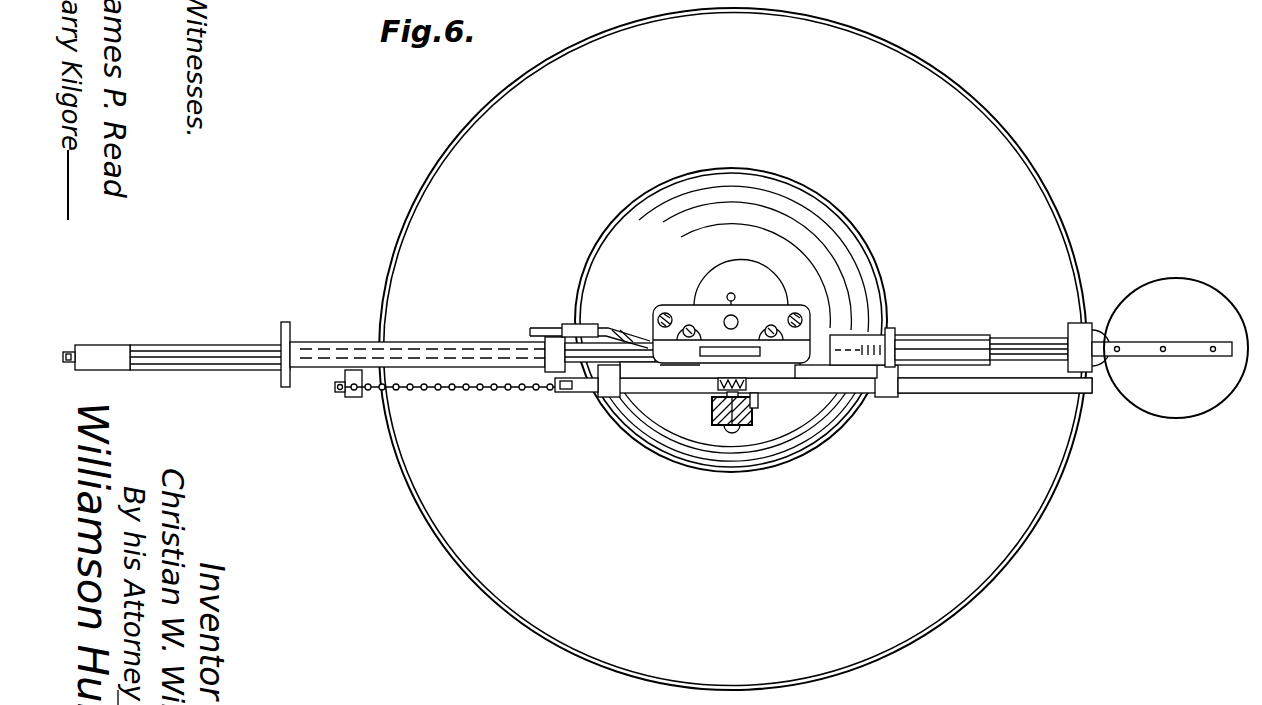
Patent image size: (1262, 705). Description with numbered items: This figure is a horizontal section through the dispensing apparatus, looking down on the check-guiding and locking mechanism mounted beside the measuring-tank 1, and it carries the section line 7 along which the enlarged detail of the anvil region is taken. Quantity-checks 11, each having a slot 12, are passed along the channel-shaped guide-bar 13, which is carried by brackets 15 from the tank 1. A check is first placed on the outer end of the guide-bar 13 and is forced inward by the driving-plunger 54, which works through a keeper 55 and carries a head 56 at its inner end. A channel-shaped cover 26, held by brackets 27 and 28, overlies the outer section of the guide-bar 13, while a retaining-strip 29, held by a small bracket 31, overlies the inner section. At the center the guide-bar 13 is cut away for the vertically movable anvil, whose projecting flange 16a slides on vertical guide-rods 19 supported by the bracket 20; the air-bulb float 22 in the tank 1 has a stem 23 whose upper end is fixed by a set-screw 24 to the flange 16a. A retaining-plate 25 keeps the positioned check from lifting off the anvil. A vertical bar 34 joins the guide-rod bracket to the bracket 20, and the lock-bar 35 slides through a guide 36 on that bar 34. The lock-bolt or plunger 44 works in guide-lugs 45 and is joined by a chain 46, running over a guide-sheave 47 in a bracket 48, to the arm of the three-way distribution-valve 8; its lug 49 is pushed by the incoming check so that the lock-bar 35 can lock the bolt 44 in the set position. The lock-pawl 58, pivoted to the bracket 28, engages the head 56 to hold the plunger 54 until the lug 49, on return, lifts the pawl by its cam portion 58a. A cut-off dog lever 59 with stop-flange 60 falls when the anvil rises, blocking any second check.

The measuring-tank 1 is at (1056, 214).
The section line x7 x7 7 is at (515, 350).
The three-way distribution-valve 8 is at (696, 366).
The quantity-check 11 is at (968, 338).
The slot of the quantity-check 12 is at (692, 382).
The channel-shaped guide-bar 13 is at (240, 372).
The brackets 15 is at (1081, 328).
The projecting flange of the anvil 16a is at (760, 330).
The vertical guide-rods 19 is at (664, 312).
The bracket 20 is at (758, 410).
The air-bulb float 22 is at (812, 218).
The vertically-projecting stem 23 is at (681, 305).
The set-screw 24 is at (740, 296).
The retaining-plate 25 is at (648, 340).
The channel-shaped cover 26 is at (392, 345).
The bracket 27 is at (291, 330).
The bracket 28 is at (553, 374).
The retaining-strip 29 is at (1000, 346).
The small bracket 31 is at (898, 336).
The vertical bar 34 is at (745, 428).
The lock-bar 35 is at (718, 392).
The guide 36 is at (752, 366).
The lock-bolt or plunger 44 is at (1005, 394).
The guide-lugs 45 is at (606, 398).
The chain 46 is at (467, 392).
The guide-sheave 47 is at (338, 390).
The bracket 48 is at (354, 398).
The lug 49 is at (835, 380).
The driving-plunger 54 is at (69, 350).
The keeper 55 is at (115, 350).
The head of the driving-plunger 56 is at (621, 319).
The lock-pawl 58 is at (582, 393).
The cam portion of the lock-pawl 58a is at (616, 400).
The cut-off dog lever 59 is at (556, 325).
The stop-flange 60 is at (560, 331).